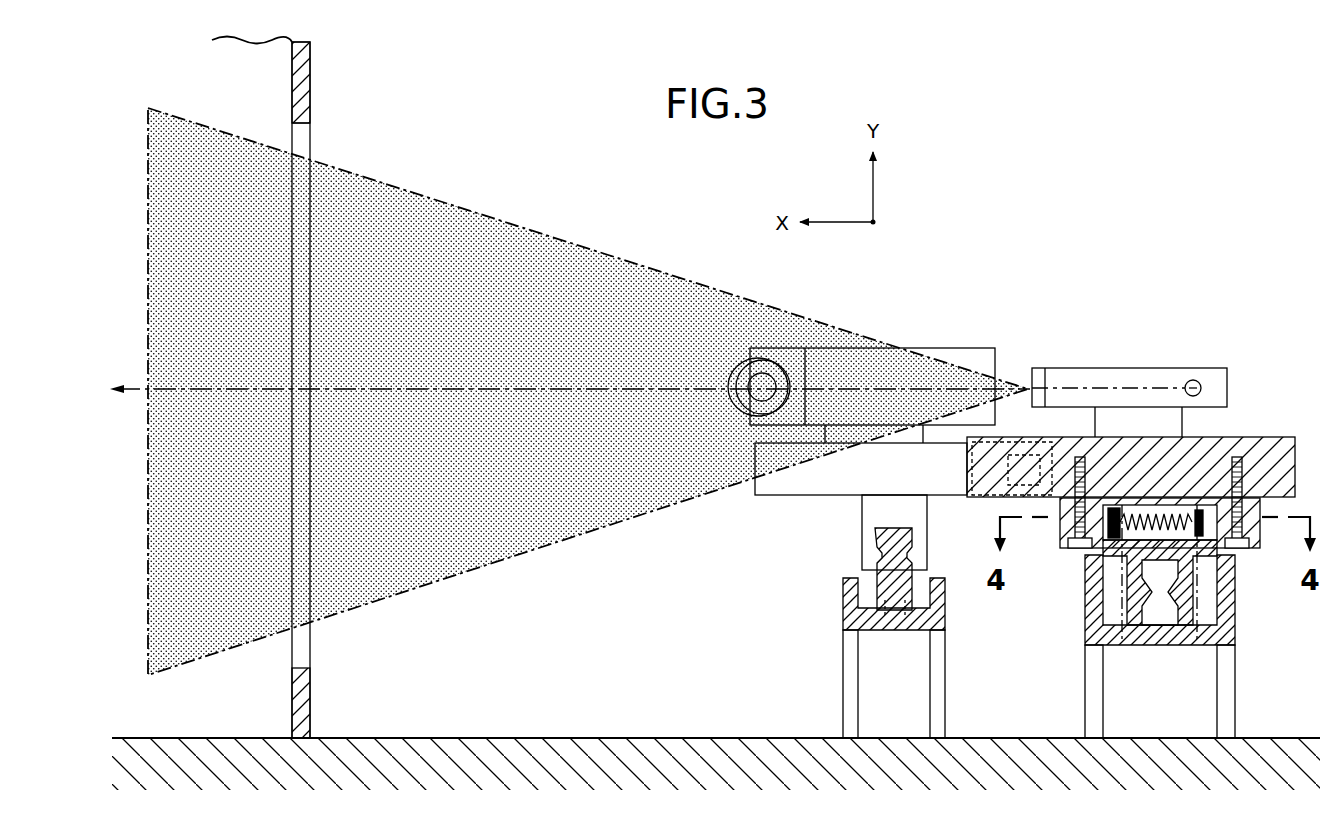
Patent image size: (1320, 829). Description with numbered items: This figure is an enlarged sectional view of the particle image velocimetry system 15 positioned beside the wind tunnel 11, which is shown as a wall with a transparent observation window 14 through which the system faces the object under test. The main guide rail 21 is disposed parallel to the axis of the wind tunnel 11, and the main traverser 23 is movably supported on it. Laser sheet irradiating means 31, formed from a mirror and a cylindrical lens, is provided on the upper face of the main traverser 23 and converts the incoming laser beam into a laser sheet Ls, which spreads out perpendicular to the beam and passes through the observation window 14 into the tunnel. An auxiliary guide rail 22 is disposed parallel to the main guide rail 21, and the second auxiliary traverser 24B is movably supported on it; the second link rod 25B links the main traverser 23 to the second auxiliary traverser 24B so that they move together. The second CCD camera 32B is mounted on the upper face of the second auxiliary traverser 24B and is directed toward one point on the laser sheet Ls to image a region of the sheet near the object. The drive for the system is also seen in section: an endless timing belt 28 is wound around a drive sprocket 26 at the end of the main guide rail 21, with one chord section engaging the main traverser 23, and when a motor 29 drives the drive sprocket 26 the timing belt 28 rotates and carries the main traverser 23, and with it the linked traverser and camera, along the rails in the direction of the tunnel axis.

The wind tunnel 11 is at (327, 90).
The transparent observation window 14 is at (300, 128).
The laser sheet Ls is at (530, 265).
The particle image velocimetry system 15 is at (1087, 252).
The second CCD camera 32B is at (967, 350).
The laser sheet irradiating means 31 is at (1140, 372).
The main traverser 23 is at (1271, 434).
The second auxiliary traverser 24B is at (812, 482).
The second link rod 25B is at (989, 497).
The drive sprocket 26 is at (1185, 492).
The auxiliary guide rail 22 is at (898, 522).
The endless timing belt 28 is at (1113, 550).
The main guide rail 21 is at (1170, 562).
The motor 29 is at (1100, 608).